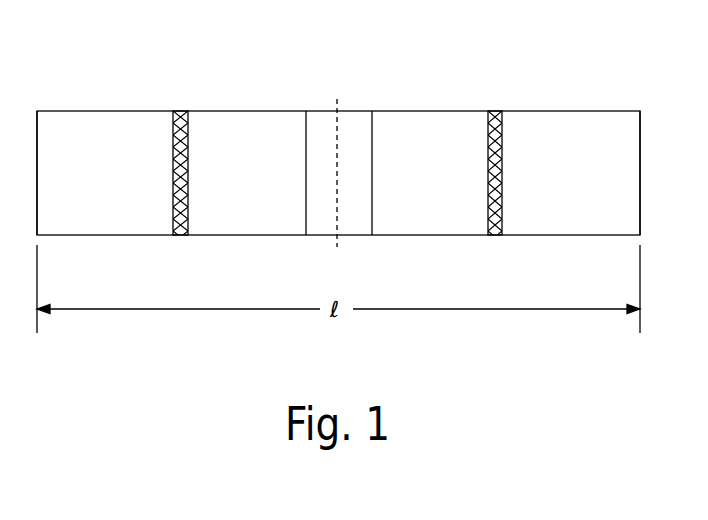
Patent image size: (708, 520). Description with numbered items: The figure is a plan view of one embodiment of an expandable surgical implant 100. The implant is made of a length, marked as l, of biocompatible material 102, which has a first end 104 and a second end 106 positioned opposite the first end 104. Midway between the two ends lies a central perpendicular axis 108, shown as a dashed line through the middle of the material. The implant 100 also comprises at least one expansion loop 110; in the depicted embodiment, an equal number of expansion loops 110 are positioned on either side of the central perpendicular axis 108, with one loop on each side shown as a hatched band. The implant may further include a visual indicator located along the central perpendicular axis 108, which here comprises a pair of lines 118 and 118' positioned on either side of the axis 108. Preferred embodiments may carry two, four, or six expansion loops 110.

The expandable surgical implant 100 is at (243, 49).
The biocompatible material 102 is at (203, 100).
The first end 104 is at (49, 117).
The second end 106 is at (622, 118).
The central perpendicular axis 108 is at (336, 88).
The expansion loop 110 is at (178, 237).
The visual indicator line 118 is at (297, 201).
The visual indicator line 118' is at (381, 201).